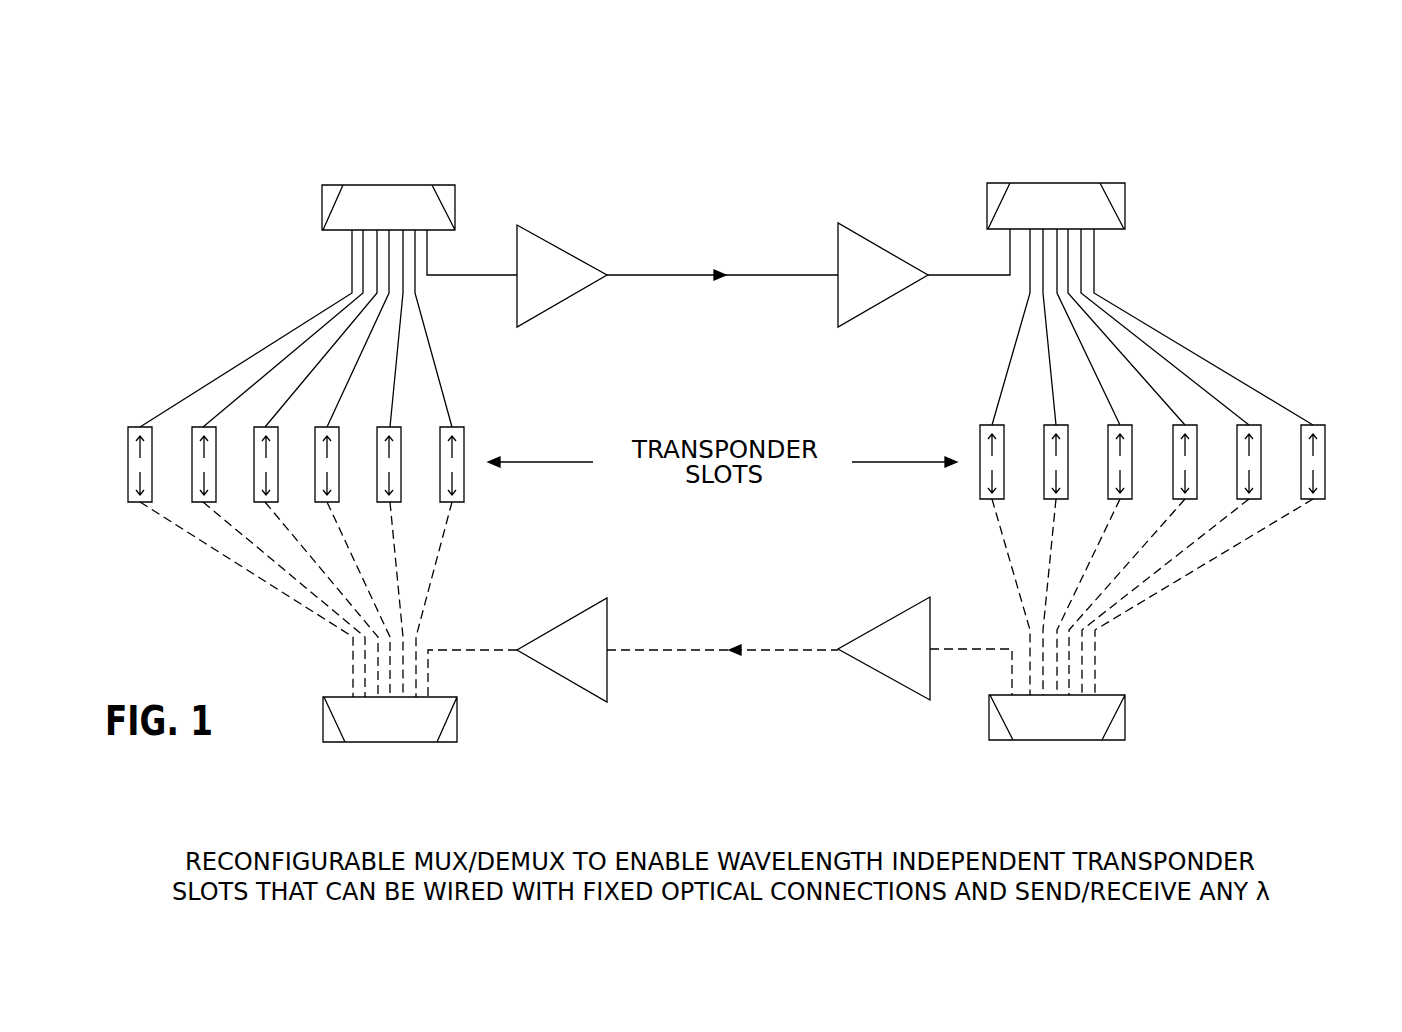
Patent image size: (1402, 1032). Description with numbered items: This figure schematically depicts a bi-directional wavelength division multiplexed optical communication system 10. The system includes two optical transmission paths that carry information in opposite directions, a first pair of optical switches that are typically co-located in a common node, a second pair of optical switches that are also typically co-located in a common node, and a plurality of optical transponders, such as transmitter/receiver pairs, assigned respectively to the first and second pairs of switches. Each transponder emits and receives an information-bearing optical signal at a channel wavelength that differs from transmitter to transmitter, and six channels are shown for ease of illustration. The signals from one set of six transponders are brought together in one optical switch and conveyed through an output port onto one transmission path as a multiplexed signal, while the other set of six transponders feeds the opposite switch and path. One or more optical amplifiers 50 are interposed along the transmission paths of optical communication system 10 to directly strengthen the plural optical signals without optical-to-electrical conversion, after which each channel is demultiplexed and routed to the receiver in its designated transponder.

The reconfigurable mux/demux system 10 is at (600, 118).
The optical amplifier 50 is at (563, 250).